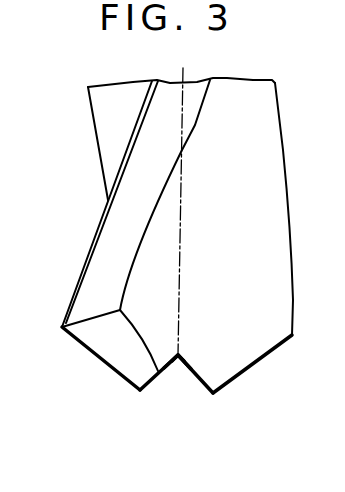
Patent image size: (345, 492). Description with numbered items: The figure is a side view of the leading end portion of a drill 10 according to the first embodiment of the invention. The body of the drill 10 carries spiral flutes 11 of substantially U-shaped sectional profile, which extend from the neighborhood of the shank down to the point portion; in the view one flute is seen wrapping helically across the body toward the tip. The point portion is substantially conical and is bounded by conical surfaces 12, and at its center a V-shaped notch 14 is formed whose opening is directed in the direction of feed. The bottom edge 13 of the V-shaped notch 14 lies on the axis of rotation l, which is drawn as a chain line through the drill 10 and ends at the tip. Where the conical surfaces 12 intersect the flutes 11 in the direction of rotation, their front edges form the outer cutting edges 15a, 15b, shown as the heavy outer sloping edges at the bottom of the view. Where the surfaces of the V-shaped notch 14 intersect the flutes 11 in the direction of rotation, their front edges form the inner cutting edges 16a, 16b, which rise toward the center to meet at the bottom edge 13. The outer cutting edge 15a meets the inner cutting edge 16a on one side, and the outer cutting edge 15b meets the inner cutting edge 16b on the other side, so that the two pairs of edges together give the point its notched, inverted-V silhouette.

The drill 10 is at (76, 229).
The spiral flutes 11 is at (107, 112).
The conical surfaces 12 is at (90, 333).
The bottom edge 13 is at (180, 354).
The V-shaped notch 14 is at (177, 375).
The outer cutting edge 15a is at (255, 367).
The outer cutting edge 15b is at (107, 367).
The inner cutting edge 16a is at (200, 382).
The inner cutting edge 16b is at (152, 385).
The axis of rotation l is at (181, 268).